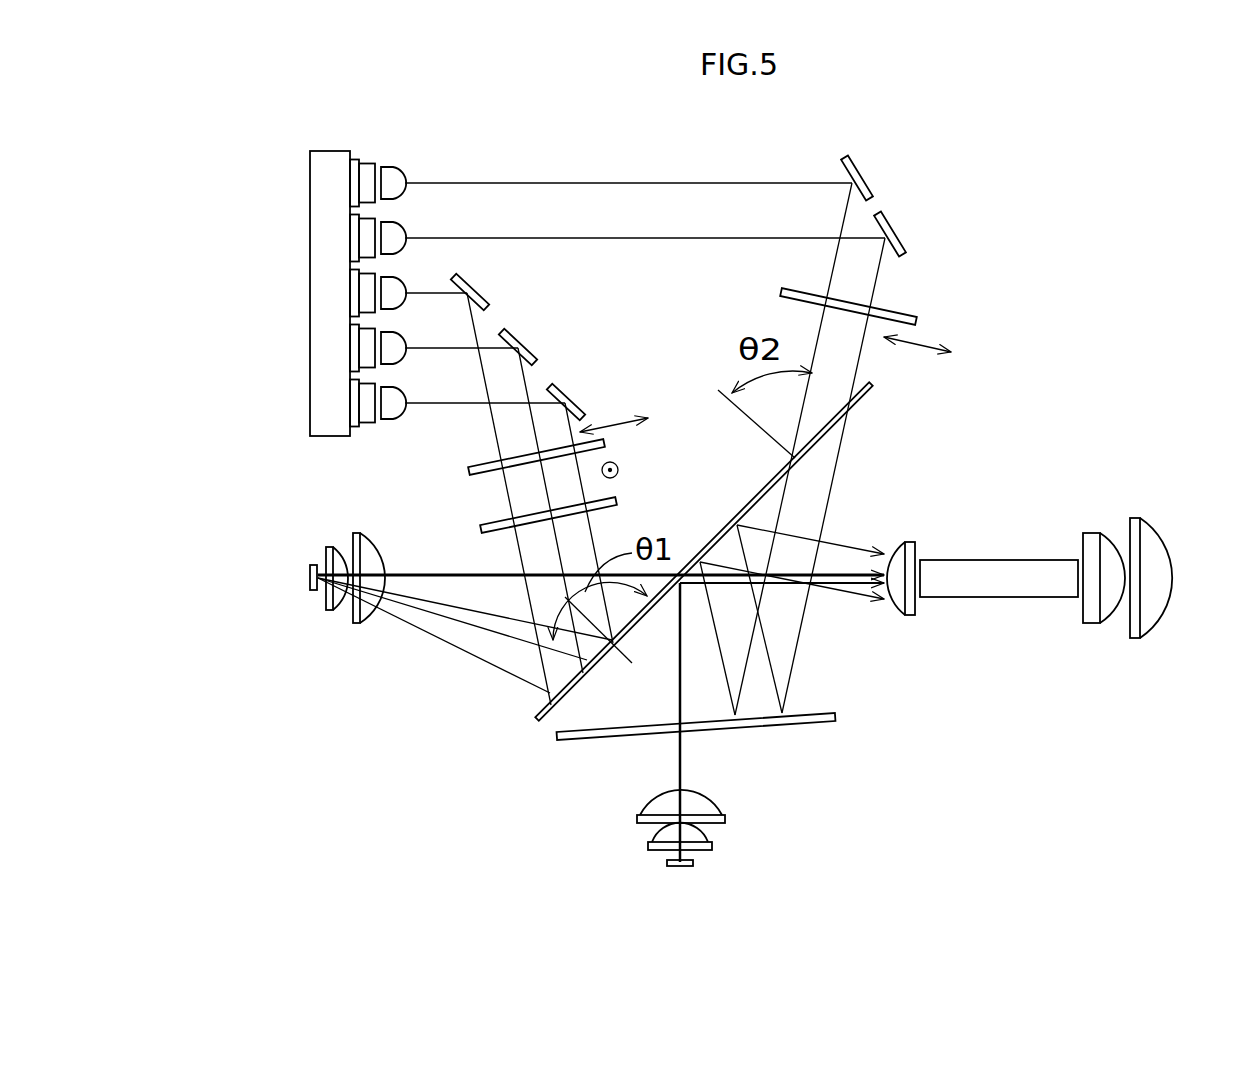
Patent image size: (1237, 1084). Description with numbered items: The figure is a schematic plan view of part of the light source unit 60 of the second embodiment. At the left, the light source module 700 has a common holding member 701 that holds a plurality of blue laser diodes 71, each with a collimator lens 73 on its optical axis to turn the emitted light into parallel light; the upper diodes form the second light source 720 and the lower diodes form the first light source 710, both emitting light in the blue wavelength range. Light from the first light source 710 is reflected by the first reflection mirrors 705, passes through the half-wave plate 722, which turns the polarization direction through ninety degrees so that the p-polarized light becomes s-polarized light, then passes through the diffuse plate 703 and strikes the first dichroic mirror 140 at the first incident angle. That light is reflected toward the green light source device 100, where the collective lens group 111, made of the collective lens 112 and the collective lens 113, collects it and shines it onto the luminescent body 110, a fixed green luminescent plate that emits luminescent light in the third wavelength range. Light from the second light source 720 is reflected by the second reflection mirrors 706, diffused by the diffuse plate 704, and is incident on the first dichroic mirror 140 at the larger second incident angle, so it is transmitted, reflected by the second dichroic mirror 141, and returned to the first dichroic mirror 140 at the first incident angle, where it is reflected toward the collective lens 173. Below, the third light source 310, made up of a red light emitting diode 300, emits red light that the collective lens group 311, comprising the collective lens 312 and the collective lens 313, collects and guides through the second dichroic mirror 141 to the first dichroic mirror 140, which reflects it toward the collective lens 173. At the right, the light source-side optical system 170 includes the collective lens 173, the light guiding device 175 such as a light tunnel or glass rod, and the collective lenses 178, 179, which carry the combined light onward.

The light source unit 60 is at (1124, 188).
The blue laser diode 71 is at (367, 160).
The collimator lens 73 is at (402, 163).
The green light source device 100 is at (316, 557).
The luminescent body 110 is at (308, 585).
The collective lens group 111 is at (347, 615).
The collective lens 112 is at (355, 622).
The collective lens 113 is at (332, 608).
The first dichroic mirror 140 is at (867, 393).
The second dichroic mirror 141 is at (832, 723).
The light source-side optical system 170 is at (1018, 536).
The collective lens 173 is at (910, 617).
The light guiding device 175 is at (988, 577).
The collective lens 178 is at (1105, 622).
The collective lens 179 is at (1158, 620).
The red light emitting diode 300 is at (673, 867).
The third light source 310 is at (703, 859).
The collective lens group 311 is at (643, 833).
The collective lens 312 is at (712, 802).
The collective lens 313 is at (710, 838).
The light source module 700 is at (306, 274).
The holding member 701 is at (327, 203).
The diffuse plate 703 is at (480, 528).
The diffuse plate 704 is at (900, 313).
The first reflection mirror 705 is at (535, 335).
The second reflection mirror 706 is at (892, 186).
The first light source 710 is at (405, 328).
The second light source 720 is at (405, 205).
The half-wave plate 722 is at (468, 470).